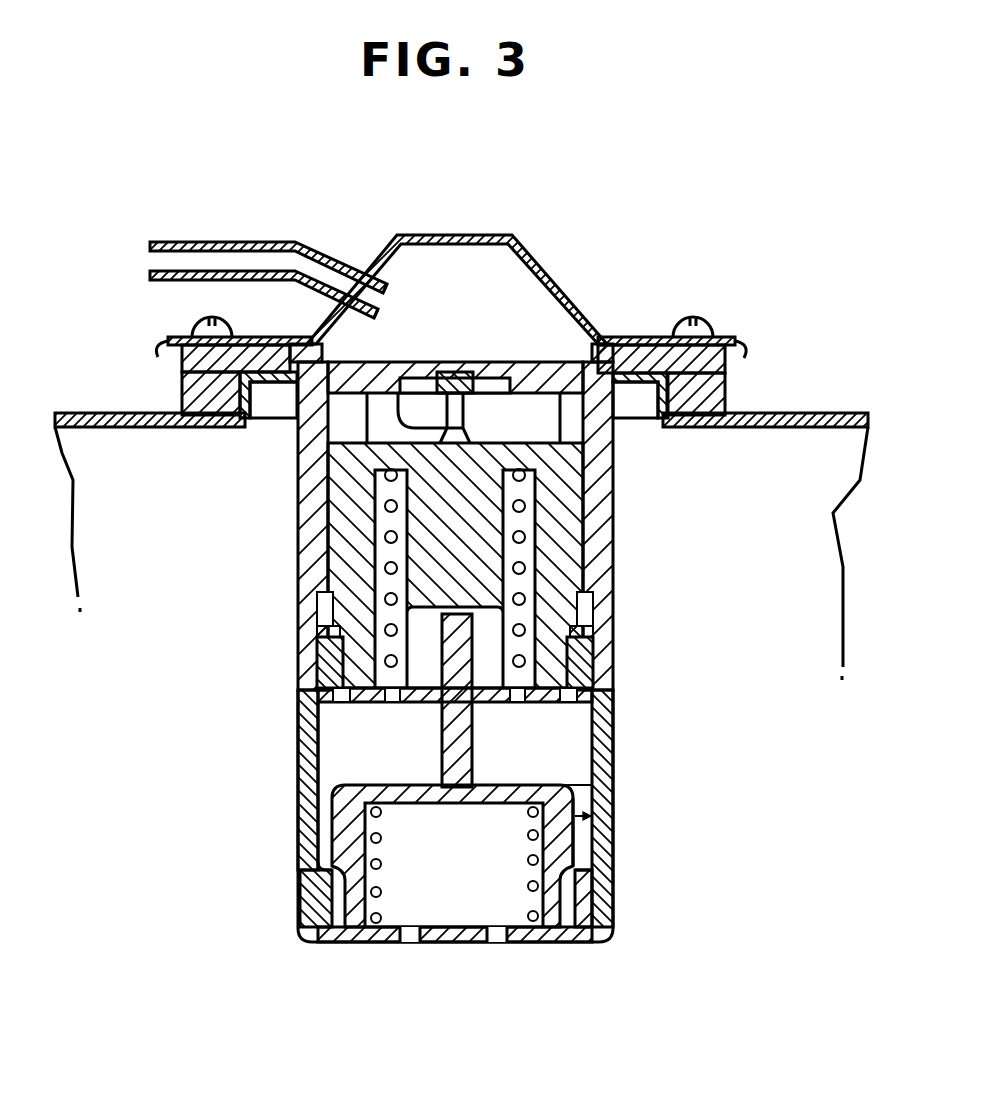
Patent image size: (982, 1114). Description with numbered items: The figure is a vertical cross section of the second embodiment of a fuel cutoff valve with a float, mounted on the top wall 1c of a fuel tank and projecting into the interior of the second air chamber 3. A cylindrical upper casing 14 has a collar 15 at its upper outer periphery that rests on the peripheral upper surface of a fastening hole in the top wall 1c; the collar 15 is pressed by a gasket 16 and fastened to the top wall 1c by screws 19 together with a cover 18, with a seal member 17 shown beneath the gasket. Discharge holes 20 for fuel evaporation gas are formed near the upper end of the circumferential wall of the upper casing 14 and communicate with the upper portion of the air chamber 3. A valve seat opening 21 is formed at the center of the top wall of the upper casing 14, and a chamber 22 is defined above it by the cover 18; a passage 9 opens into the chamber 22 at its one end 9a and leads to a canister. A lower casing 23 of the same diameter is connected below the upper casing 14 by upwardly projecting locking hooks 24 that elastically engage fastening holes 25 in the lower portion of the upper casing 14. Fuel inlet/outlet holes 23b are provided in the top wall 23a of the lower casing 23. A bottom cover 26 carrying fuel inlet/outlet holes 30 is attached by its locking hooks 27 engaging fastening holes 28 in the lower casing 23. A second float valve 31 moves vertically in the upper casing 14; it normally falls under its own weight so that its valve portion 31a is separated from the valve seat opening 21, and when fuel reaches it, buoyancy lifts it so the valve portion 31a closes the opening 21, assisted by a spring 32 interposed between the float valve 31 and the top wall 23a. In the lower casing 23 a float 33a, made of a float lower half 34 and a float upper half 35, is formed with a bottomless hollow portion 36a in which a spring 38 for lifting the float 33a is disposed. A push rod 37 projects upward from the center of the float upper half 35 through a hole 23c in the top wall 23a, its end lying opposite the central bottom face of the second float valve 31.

The top wall 1c is at (810, 413).
The second air chamber 3 is at (726, 594).
The passage 9 is at (248, 242).
The end of passage 9a is at (388, 292).
The upper casing 14 is at (306, 518).
The collar 15 is at (600, 358).
The gasket 16 is at (716, 345).
The seal member 17 is at (727, 390).
The cover 18 is at (505, 233).
The screws 19 is at (690, 321).
The discharge holes 20 is at (275, 407).
The valve seat opening 21 is at (458, 405).
The chamber 22 is at (456, 262).
The lower casing 23 is at (306, 778).
The top wall 23a is at (350, 708).
The fuel inlet/outlet holes 23b is at (382, 705).
The hole 23c is at (478, 688).
The locking hooks 24 is at (612, 640).
The fastening holes 25 is at (616, 650).
The bottom cover 26 is at (485, 944).
The locking hooks 27 is at (310, 867).
The fastening holes 28 is at (305, 882).
The fuel inlet/outlet holes 30 is at (502, 944).
The second float valve 31 is at (578, 530).
The valve portion 31a is at (398, 376).
The spring 32 is at (385, 578).
The float 33a is at (612, 812).
The float lower half 34 is at (592, 848).
The float upper half 35 is at (527, 785).
The bottomless hollow portion 36a is at (448, 885).
The push rod 37 is at (472, 742).
The spring 38 is at (385, 866).